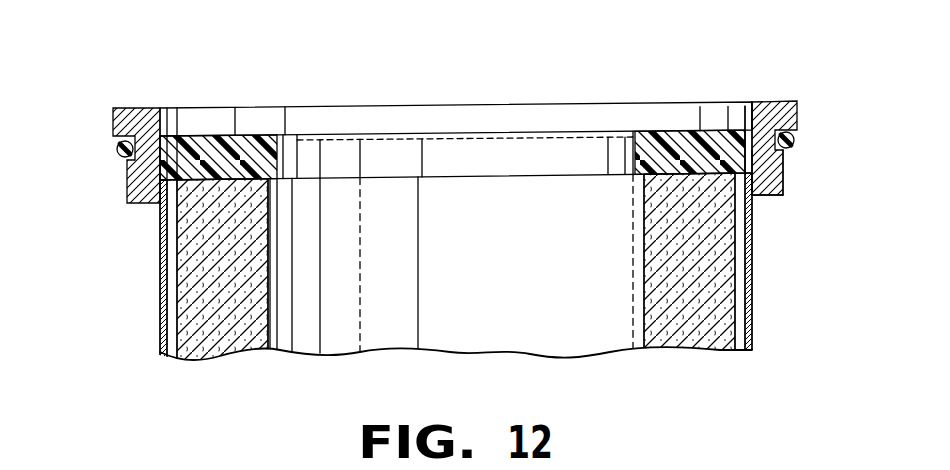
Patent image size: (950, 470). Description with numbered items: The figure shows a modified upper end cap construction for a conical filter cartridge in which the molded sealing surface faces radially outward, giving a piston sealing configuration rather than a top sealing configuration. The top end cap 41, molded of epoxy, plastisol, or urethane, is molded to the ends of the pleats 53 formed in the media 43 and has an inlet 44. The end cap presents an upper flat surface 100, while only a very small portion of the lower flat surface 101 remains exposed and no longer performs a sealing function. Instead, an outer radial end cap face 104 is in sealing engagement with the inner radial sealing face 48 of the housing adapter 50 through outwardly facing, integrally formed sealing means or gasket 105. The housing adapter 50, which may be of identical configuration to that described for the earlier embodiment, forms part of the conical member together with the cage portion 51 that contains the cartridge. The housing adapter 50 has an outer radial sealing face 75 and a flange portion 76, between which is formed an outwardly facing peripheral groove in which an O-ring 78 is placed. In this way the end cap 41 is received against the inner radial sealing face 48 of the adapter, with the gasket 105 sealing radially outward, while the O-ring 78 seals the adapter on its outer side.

The upper flat surface 100 is at (247, 137).
The outer radial end cap face 104 is at (165, 162).
The top end cap 41 is at (698, 140).
The inlet 44 is at (638, 153).
The lower flat surface 101 is at (190, 183).
The pleats 53 is at (197, 327).
The media 43 is at (662, 272).
The cage portion 51 is at (753, 303).
The inner radial sealing face 48 is at (740, 117).
The housing adapter 50 is at (120, 195).
The sealing means or gasket 105 is at (127, 163).
The flange portion 76 is at (803, 110).
The outer radial sealing face 75 is at (783, 184).
The O-ring 78 is at (796, 143).